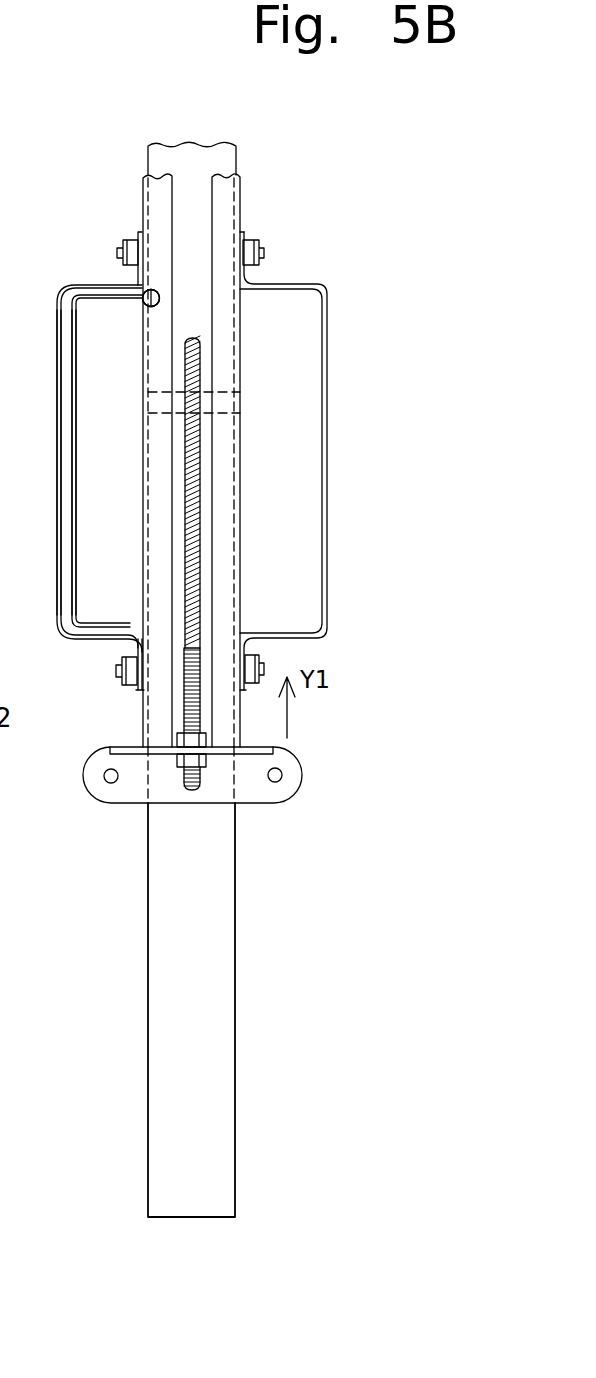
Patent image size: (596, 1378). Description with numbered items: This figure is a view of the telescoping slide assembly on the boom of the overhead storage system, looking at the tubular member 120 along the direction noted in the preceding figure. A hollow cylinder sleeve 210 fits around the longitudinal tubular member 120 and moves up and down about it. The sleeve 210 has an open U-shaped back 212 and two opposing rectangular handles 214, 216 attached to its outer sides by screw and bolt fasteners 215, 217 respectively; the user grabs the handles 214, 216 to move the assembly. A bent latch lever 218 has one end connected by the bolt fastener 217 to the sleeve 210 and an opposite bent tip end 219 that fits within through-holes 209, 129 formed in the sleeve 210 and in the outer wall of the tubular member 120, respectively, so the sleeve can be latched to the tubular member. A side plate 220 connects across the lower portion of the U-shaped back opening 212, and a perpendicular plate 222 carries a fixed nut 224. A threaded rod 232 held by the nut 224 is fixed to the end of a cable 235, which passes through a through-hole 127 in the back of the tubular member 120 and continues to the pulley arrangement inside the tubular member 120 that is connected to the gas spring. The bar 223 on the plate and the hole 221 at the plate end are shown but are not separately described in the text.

The tubular member 120 is at (210, 650).
The hollow cylinder sleeve 210 is at (219, 181).
The through-hole in sleeve 209 is at (159, 292).
The through-hole in tubular member 129 is at (160, 296).
The screw and bolt fastener 215 is at (258, 238).
The through-hole in back of tubular member 127 is at (308, 520).
The rectangular handle 214 is at (327, 372).
The bent tip end 219 is at (148, 307).
The bent latch lever 218 is at (78, 555).
The open U-shaped back 212 is at (212, 513).
The cable 235 is at (197, 588).
The threaded rod 232 is at (197, 670).
The rectangular handle 216 is at (70, 285).
The bolt fastener 217 is at (126, 686).
The bar 223 is at (279, 771).
The side plate 220 is at (236, 811).
The left mounting hole 221 is at (111, 786).
The perpendicular plate 222 is at (270, 802).
The fixed nut 224 is at (207, 765).